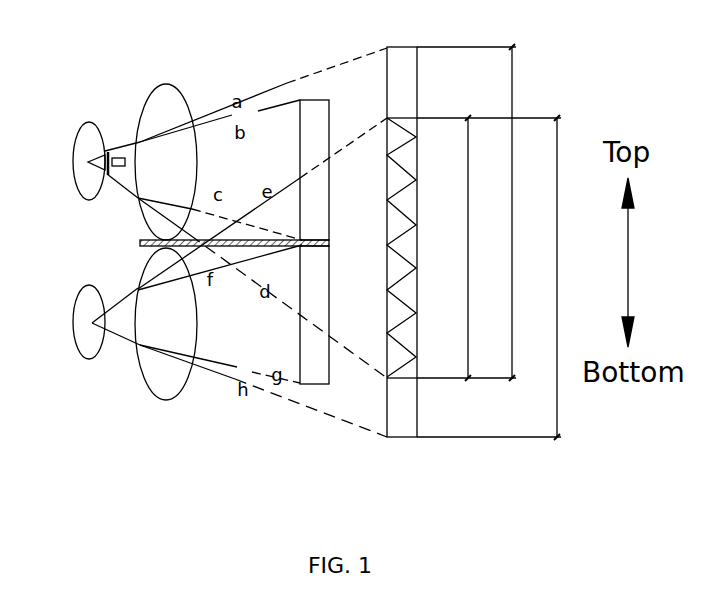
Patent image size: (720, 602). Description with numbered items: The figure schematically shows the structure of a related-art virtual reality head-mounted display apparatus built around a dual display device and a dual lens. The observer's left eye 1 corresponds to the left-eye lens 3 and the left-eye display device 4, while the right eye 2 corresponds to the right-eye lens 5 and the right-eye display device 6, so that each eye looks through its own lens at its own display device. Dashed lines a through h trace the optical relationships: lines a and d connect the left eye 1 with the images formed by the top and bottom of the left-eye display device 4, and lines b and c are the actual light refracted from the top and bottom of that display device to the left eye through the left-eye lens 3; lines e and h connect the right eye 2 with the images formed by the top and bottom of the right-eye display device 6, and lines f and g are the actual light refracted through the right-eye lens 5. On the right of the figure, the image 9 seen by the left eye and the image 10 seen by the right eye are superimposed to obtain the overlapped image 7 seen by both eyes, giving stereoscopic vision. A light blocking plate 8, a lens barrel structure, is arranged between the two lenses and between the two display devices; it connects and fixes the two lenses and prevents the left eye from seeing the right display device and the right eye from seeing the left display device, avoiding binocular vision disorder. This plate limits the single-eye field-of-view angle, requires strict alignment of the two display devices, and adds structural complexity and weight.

The left eye 1 is at (87, 143).
The right eye 2 is at (88, 347).
The left-eye lens 3 is at (165, 105).
The left-eye display device 4 is at (312, 122).
The right-eye lens 5 is at (167, 380).
The right-eye display device 6 is at (315, 358).
The overlapped image 7 is at (454, 248).
The light blocking plate 8 is at (145, 241).
The image seen by the left eye 9 is at (498, 212).
The image seen by the right eye 10 is at (543, 277).